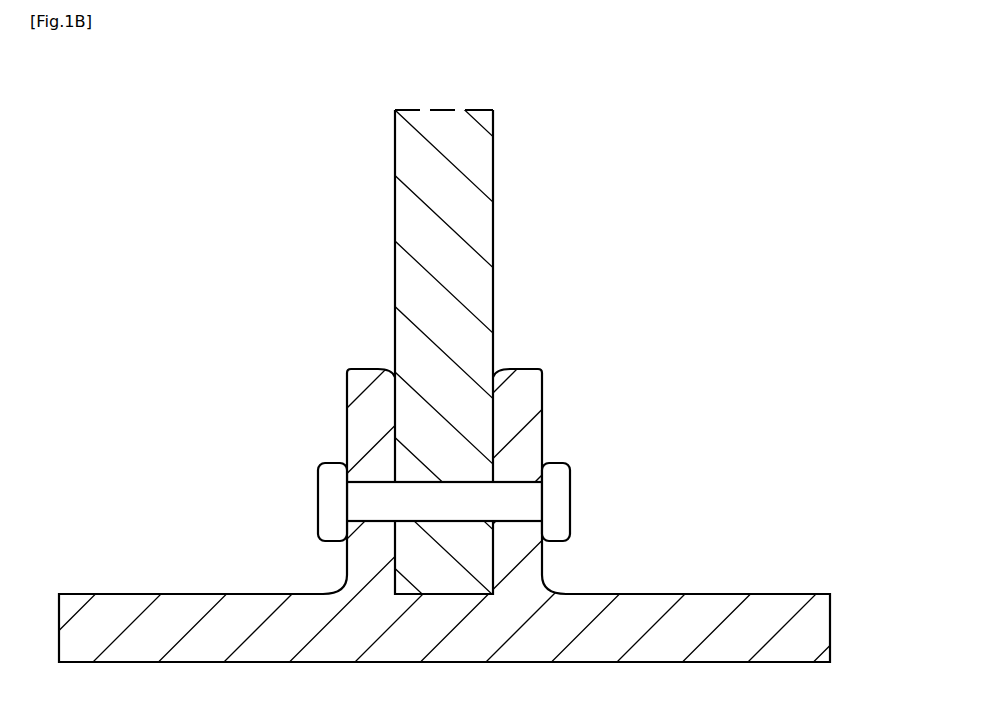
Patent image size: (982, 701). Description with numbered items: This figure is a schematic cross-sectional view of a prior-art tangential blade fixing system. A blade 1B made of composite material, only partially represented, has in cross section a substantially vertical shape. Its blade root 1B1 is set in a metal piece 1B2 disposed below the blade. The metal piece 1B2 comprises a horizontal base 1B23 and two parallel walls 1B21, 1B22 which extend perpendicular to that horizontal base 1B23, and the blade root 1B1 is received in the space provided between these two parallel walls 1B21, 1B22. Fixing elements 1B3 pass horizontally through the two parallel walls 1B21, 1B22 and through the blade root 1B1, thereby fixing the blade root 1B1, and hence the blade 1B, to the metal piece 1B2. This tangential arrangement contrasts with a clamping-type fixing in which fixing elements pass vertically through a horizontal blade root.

The blade 1B is at (227, 170).
The blade root 1B1 is at (495, 400).
The metal piece 1B2 is at (787, 593).
The parallel wall 1B21 is at (347, 427).
The parallel wall 1B22 is at (542, 427).
The horizontal base 1B23 is at (118, 594).
The fixing element 1B3 is at (570, 500).